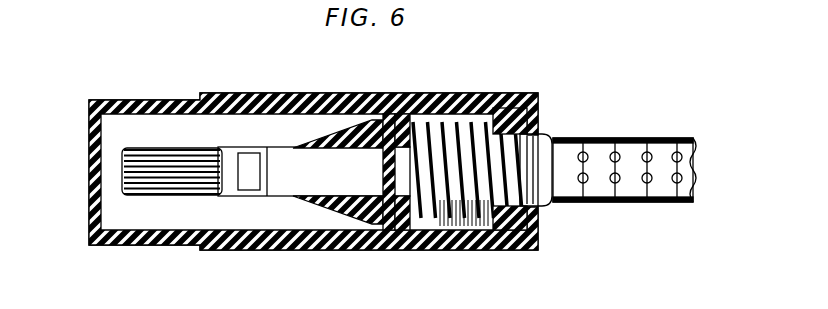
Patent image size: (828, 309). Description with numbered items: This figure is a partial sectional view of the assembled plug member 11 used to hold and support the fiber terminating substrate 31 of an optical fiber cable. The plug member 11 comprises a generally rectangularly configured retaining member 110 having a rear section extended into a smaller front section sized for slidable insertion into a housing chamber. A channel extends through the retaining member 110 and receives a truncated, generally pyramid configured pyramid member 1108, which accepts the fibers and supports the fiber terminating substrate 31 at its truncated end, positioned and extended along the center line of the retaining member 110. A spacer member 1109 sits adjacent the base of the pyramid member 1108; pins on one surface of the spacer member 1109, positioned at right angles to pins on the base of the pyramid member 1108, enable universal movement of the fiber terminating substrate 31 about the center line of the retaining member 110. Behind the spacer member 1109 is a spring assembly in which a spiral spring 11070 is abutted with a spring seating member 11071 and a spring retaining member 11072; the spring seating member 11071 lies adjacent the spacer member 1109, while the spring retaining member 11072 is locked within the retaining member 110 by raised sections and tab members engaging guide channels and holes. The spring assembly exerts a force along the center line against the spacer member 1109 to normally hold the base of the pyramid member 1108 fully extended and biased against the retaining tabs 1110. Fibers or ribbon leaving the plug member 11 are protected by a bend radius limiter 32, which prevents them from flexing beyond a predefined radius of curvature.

The plug member 11 is at (613, 93).
The retaining member 110 is at (236, 93).
The substrate 31 is at (130, 148).
The retaining tabs 1110 is at (348, 116).
The pyramid member 1108 is at (365, 218).
The spacer member 1109 is at (392, 93).
The spring seating member 11071 is at (453, 94).
The spiral spring 11070 is at (480, 232).
The spring retaining member 11072 is at (540, 213).
The bend radius limiter 32 is at (633, 138).